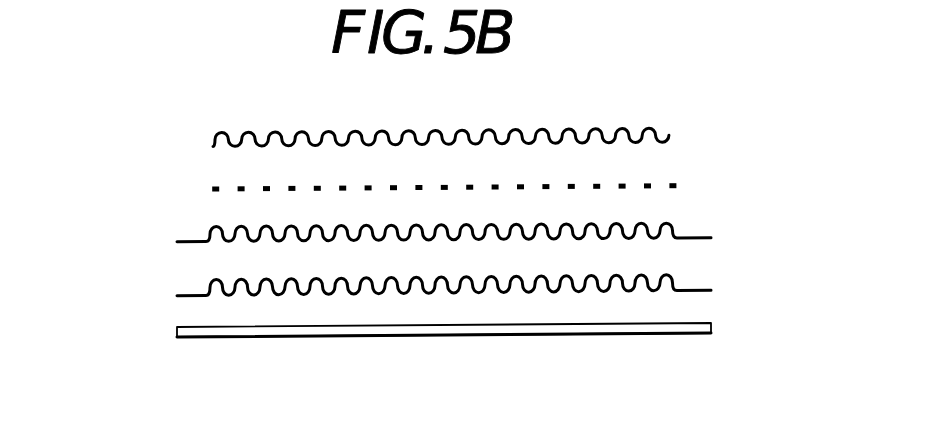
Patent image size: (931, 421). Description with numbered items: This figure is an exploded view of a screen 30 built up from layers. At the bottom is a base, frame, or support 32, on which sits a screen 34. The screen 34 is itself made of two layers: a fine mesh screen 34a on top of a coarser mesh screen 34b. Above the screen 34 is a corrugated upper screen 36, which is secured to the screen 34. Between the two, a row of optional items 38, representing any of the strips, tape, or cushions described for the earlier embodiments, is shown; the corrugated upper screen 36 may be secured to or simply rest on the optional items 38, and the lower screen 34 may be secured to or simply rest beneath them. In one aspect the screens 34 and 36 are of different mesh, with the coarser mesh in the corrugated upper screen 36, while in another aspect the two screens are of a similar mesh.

The screen 30 is at (158, 164).
The base, frame, or support 32 is at (503, 328).
The screen 34 is at (792, 228).
The fine mesh screen 34a is at (210, 243).
The coarser mesh screen 34b is at (210, 296).
The corrugated upper screen 36 is at (666, 136).
The optional items 38 is at (185, 200).